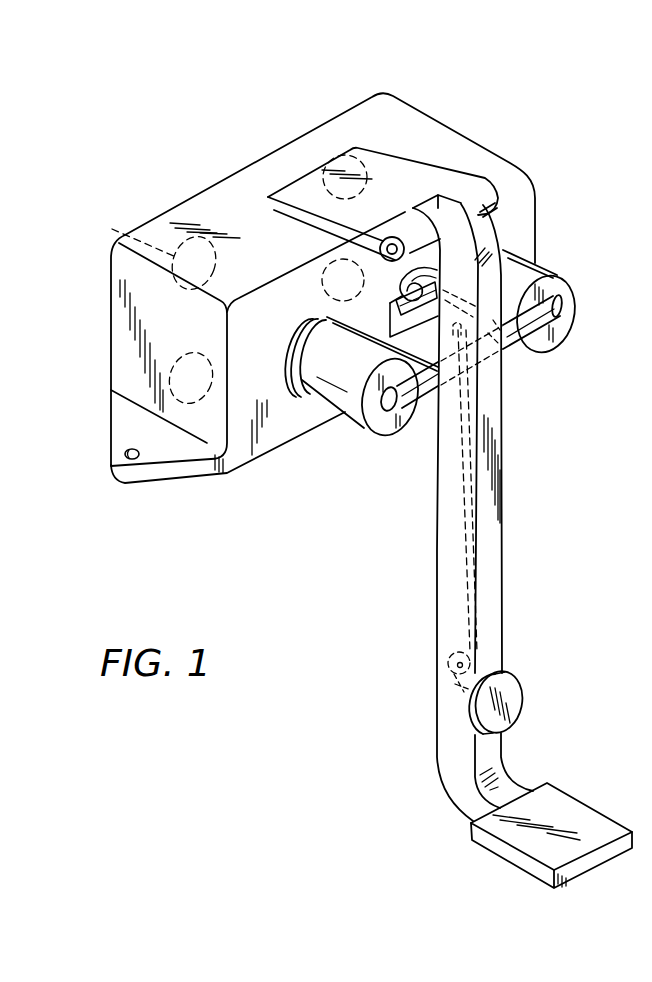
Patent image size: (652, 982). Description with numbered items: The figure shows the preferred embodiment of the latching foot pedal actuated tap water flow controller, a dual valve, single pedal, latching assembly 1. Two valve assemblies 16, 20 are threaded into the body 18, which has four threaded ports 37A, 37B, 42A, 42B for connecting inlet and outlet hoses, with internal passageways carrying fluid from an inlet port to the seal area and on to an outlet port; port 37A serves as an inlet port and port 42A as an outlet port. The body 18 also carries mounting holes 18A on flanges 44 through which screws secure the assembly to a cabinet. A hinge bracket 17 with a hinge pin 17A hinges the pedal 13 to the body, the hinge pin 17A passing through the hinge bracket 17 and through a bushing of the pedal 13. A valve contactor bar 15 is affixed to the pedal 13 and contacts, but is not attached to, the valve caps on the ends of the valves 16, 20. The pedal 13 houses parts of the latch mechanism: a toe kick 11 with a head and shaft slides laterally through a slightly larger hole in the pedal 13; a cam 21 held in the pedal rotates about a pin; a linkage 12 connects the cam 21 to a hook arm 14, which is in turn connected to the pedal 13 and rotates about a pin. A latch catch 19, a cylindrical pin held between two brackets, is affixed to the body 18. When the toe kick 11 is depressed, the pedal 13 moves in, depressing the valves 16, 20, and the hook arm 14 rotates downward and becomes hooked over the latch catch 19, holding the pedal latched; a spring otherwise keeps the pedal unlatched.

The dual valve, single pedal, latching assembly 1 is at (228, 560).
The toe kick 11 is at (512, 690).
The linkage 12 is at (478, 472).
The pedal 13 is at (505, 413).
The hook arm 14 is at (503, 352).
The valve contactor bar 15 is at (561, 318).
The valve assembly 16 is at (558, 293).
The hinge bracket 17 is at (498, 195).
The hinge pin 17A is at (384, 237).
The body 18 is at (493, 155).
The mounting holes 18A is at (125, 458).
The latch catch 19 is at (390, 303).
The valve assembly 20 is at (377, 420).
The cam 21 is at (448, 662).
The inlet port 37A is at (110, 229).
The threaded port 37B is at (362, 160).
The outlet port 42A is at (168, 363).
The threaded port 42B is at (325, 262).
The flanges 44 is at (113, 431).